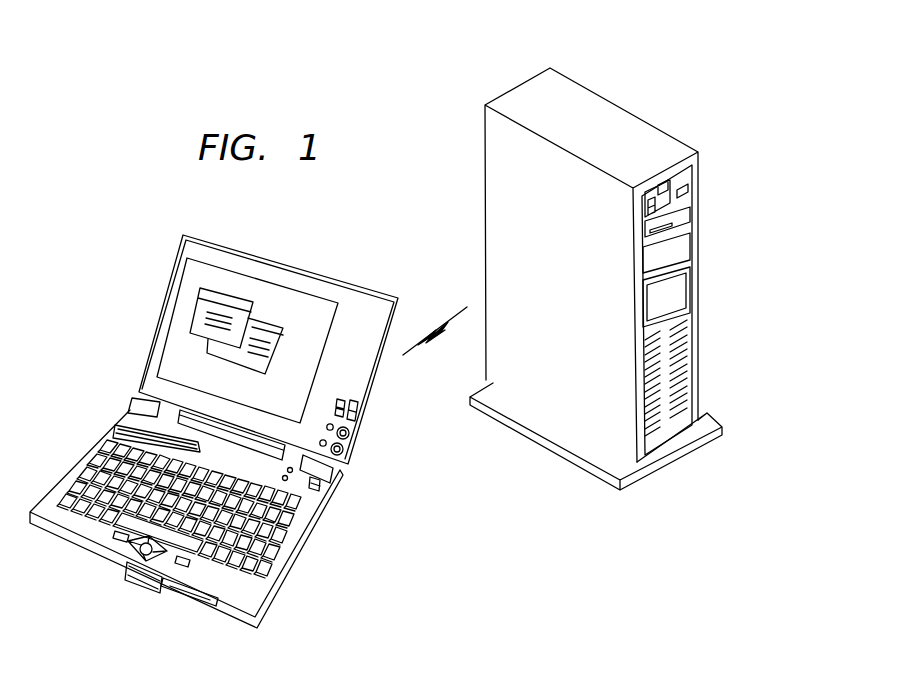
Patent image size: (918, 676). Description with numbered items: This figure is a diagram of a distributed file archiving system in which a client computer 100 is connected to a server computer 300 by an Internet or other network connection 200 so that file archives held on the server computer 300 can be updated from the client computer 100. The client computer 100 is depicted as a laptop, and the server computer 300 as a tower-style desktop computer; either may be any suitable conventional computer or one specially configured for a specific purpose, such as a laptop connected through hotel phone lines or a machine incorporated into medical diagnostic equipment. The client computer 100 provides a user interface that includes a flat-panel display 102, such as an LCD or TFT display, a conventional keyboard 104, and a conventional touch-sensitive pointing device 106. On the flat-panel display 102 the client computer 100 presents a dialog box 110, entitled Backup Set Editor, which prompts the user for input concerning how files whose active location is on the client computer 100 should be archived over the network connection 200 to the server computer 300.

The client computer 100 is at (84, 310).
The flat-panel display 102 is at (282, 275).
The keyboard 104 is at (95, 466).
The touch-sensitive pointing device 106 is at (129, 563).
The dialog box 110 is at (200, 333).
The network connection 200 is at (418, 347).
The server computer 300 is at (443, 184).